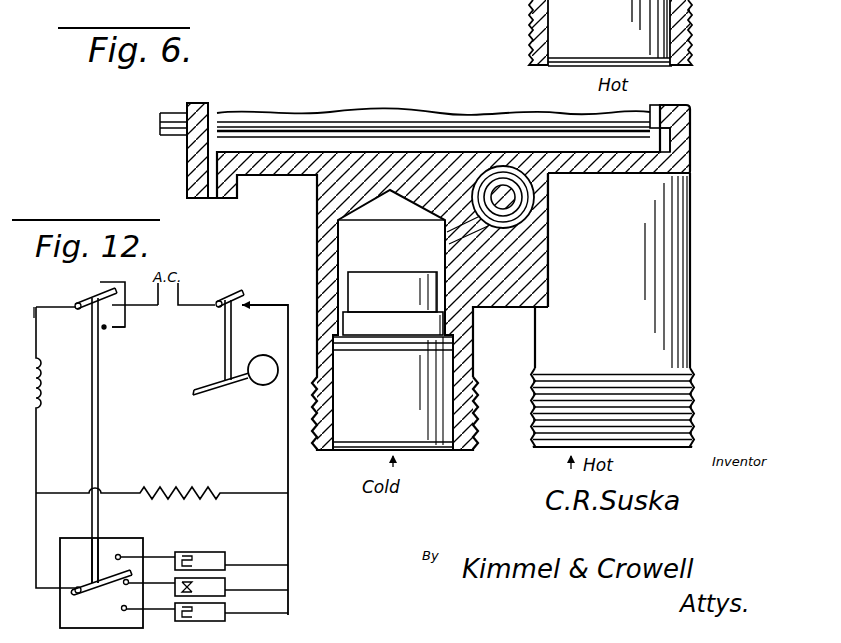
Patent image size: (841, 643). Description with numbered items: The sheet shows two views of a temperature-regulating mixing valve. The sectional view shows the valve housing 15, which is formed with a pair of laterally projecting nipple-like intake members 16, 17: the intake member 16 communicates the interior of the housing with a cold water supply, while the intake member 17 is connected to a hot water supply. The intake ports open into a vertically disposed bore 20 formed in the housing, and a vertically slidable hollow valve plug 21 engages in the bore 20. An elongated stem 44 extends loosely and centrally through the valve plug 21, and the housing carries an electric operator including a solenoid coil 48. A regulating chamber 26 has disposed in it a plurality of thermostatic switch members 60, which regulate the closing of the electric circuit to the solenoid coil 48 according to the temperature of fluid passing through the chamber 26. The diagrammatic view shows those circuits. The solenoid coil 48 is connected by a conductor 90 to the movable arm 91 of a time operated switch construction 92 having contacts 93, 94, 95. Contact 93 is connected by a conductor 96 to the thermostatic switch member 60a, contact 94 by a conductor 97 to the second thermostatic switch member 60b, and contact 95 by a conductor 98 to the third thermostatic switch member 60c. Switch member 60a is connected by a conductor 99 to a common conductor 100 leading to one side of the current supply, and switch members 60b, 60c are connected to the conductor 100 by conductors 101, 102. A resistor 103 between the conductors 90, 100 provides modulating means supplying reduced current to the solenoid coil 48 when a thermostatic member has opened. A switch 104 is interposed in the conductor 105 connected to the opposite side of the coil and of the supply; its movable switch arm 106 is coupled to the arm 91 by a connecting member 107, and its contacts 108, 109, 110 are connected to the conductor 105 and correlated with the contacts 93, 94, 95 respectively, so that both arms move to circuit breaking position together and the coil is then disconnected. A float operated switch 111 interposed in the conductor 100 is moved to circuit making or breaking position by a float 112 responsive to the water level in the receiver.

In FIG. 6, the valve housing 15 is at (700, 151).
In FIG. 6, the intake member 16 is at (477, 369).
In FIG. 6, the intake member 17 is at (690, 345).
In FIG. 6, the bore 20 is at (506, 151).
In FIG. 6, the valve plug 21 is at (486, 186).
In FIG. 6, the regulating chamber 26 is at (690, 131).
In FIG. 6, the stem 44 is at (508, 187).
In FIG. 6, the thermostatic switch member 60 is at (420, 118).
In FIG. 12, the solenoid coil 48 is at (37, 357).
In FIG. 12, the conductor 90 is at (37, 450).
In FIG. 12, the movable arm 91 is at (82, 572).
In FIG. 12, the time operated switch construction 92 is at (129, 536).
In FIG. 12, the contact 93 is at (123, 553).
In FIG. 12, the contact 94 is at (101, 595).
In FIG. 12, the contact 95 is at (122, 611).
In FIG. 12, the conductor 96 is at (176, 548).
In FIG. 12, the conductor 97 is at (157, 558).
In FIG. 12, the conductor 98 is at (172, 612).
In FIG. 12, the conductor 99 is at (238, 565).
In FIG. 12, the conductor 100 is at (290, 497).
In FIG. 12, the conductor 101 is at (278, 588).
In FIG. 12, the conductor 102 is at (292, 614).
In FIG. 12, the resistor 103 is at (177, 487).
In FIG. 12, the switch 104 is at (80, 299).
In FIG. 12, the conductor 105 is at (34, 318).
In FIG. 12, the switch arm 106 is at (93, 293).
In FIG. 12, the connecting member 107 is at (100, 429).
In FIG. 12, the contact 108 is at (127, 282).
In FIG. 12, the contact 109 is at (112, 327).
In FIG. 12, the contact 110 is at (105, 330).
In FIG. 12, the float operated switch 111 is at (230, 287).
In FIG. 12, the float 112 is at (236, 385).
In FIG. 12, the thermostatic switch member 60a is at (231, 534).
In FIG. 12, the thermostatic switch member 60b is at (268, 572).
In FIG. 12, the thermostatic switch member 60c is at (264, 619).